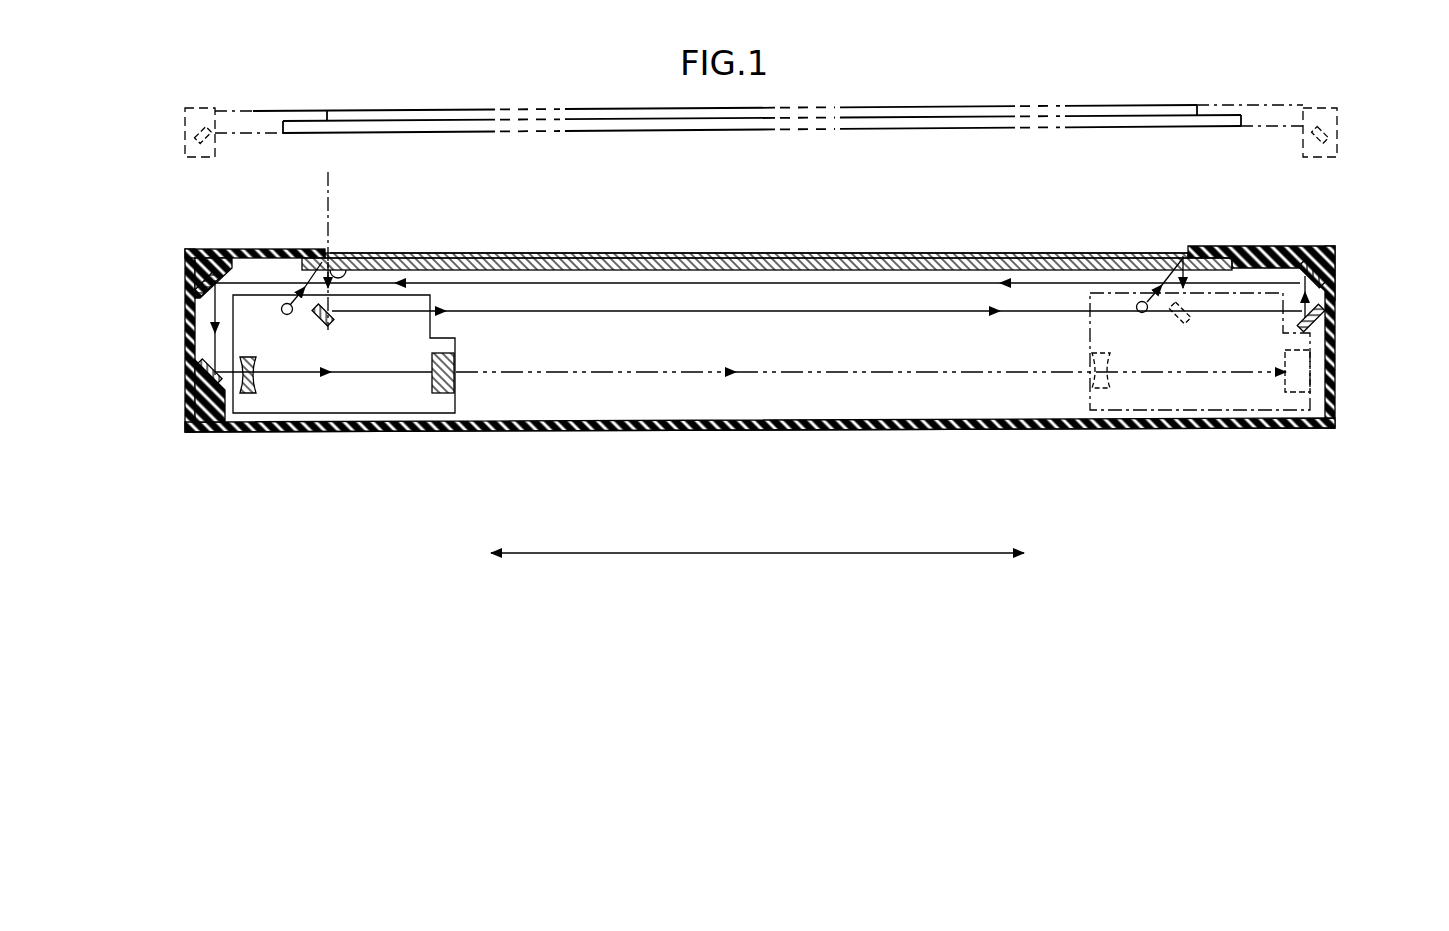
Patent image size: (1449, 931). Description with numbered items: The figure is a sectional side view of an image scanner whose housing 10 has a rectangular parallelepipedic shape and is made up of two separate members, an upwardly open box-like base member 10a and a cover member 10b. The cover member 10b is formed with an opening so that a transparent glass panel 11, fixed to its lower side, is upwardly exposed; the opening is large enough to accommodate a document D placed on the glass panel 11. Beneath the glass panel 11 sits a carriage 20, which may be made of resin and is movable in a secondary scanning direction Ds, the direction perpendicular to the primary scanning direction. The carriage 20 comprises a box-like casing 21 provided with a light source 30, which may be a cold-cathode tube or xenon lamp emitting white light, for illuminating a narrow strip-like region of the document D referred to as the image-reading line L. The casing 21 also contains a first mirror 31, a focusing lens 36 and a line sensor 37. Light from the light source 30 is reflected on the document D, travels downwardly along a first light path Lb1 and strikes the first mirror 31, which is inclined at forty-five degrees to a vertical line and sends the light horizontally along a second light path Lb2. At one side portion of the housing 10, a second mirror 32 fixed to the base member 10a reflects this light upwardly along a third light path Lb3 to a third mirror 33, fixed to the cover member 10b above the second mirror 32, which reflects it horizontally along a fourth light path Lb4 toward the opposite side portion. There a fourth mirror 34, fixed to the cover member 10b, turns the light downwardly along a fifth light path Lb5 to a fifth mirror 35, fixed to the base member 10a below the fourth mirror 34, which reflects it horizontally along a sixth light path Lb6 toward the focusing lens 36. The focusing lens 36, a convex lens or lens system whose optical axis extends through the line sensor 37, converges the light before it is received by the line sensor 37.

The housing 10 is at (1341, 372).
The base member 10a is at (1238, 430).
The cover member 10b is at (1337, 258).
The transparent glass panel 11 is at (1010, 256).
The carriage 20 is at (411, 291).
The casing 21 is at (385, 413).
The light source 30 is at (283, 304).
The first mirror 31 is at (318, 325).
The second mirror 32 is at (1337, 316).
The third mirror 33 is at (1302, 262).
The fourth mirror 34 is at (185, 274).
The fifth mirror 35 is at (195, 388).
The focusing lens 36 is at (246, 395).
The line sensor 37 is at (445, 400).
The image-reading line L is at (326, 242).
The document D is at (770, 255).
The secondary scanning direction Ds is at (757, 539).
The first light path Lb1 is at (350, 272).
The second light path Lb2 is at (686, 310).
The third light path Lb3 is at (1253, 264).
The fourth light path Lb4 is at (872, 282).
The fifth light path Lb5 is at (213, 315).
The sixth light path Lb6 is at (196, 372).